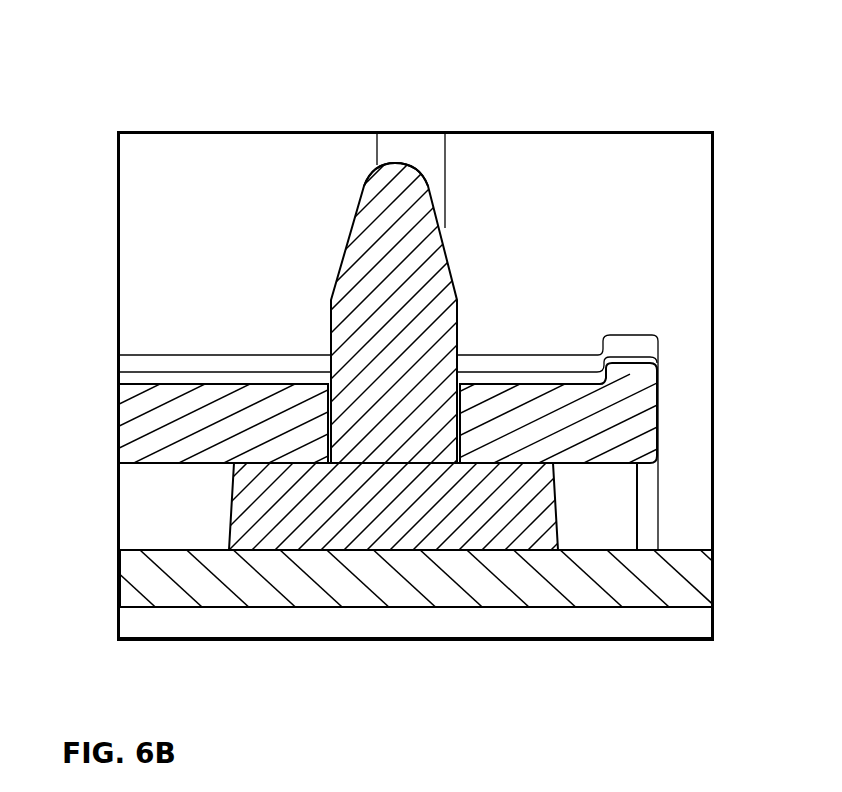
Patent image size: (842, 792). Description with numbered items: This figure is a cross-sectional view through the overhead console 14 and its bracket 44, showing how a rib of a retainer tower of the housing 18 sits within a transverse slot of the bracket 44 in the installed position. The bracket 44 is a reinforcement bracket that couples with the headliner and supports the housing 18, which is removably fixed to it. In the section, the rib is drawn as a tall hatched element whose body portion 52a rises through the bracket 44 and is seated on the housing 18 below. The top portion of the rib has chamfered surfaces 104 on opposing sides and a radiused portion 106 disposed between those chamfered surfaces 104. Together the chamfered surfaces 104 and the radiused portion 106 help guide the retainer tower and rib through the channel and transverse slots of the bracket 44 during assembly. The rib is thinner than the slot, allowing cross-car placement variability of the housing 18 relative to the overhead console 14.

The chamfered surfaces 104 is at (352, 228).
The radiused portion 106 is at (397, 163).
The protrusion 52a is at (356, 317).
The bracket 44 is at (632, 398).
The overhead console 14 is at (170, 607).
The housing 18 is at (650, 585).